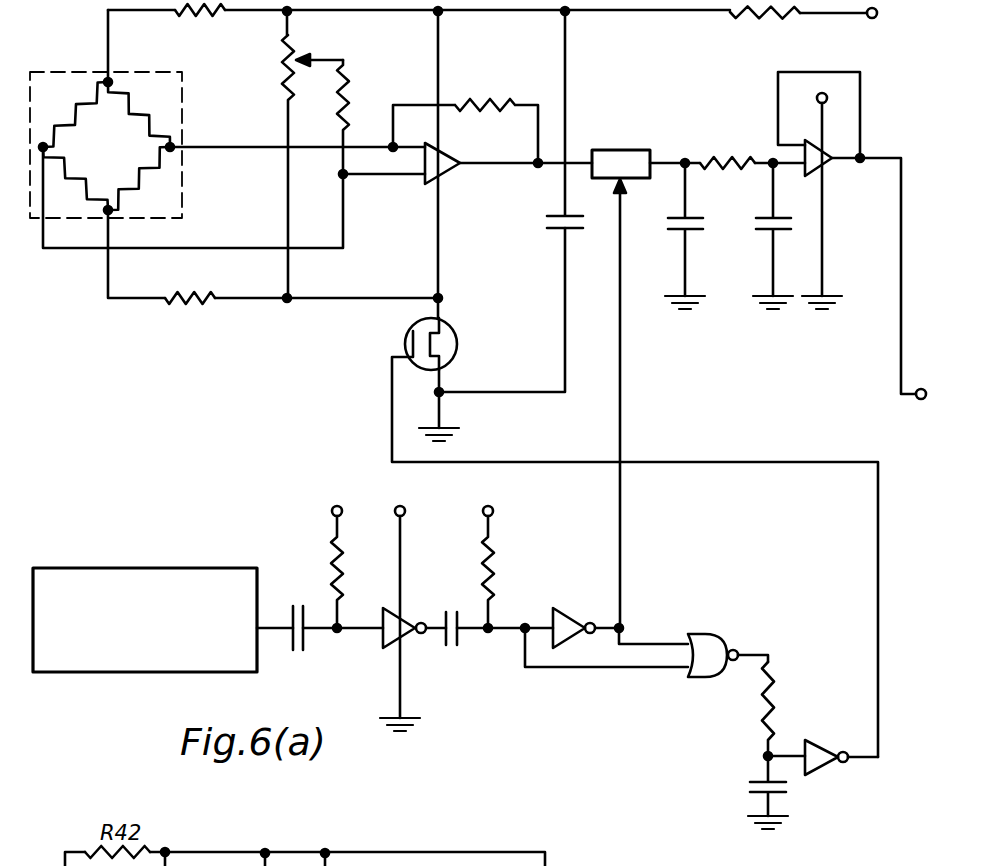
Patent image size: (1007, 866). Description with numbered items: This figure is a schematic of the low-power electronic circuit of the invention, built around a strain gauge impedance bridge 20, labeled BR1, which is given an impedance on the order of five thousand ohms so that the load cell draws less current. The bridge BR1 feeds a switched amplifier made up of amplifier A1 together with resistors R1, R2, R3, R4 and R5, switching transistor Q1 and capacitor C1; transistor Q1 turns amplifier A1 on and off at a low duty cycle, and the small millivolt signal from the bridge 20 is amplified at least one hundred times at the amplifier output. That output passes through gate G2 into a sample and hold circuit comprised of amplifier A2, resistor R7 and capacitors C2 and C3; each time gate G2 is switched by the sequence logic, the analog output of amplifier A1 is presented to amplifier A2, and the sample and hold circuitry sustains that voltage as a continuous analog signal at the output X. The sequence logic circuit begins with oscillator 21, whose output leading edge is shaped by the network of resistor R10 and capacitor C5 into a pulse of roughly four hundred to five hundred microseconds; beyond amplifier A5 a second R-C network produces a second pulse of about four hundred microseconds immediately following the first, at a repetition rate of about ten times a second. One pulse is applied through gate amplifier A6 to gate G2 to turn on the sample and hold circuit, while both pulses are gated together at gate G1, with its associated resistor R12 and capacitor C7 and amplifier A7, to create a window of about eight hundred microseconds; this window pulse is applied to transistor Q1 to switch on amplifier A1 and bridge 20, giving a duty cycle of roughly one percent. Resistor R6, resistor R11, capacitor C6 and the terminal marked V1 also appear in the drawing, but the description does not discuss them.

The strain gauge impedance bridge 20 is at (68, 71).
The oscillator 21 is at (147, 568).
The strain gauge impedance bridge BR1 is at (106, 146).
The resistor R1 is at (200, 29).
The resistor R2 is at (290, 154).
The resistor R3 is at (360, 117).
The resistor R4 is at (190, 284).
The resistor R5 is at (465, 117).
The resistor R6 is at (765, 31).
The resistor R7 is at (727, 150).
The resistor R10 is at (360, 567).
The resistor R11 is at (511, 567).
The resistor R12 is at (794, 709).
The capacitor C1 is at (545, 126).
The capacitor C2 is at (666, 236).
The capacitor C3 is at (755, 236).
The capacitor C5 is at (291, 646).
The capacitor C6 is at (451, 649).
The capacitor C7 is at (743, 792).
The switched amplifier A1 is at (450, 173).
The amplifier A2 is at (846, 233).
The amplifier A5 is at (405, 618).
The gate amplifier A6 is at (574, 620).
The amplifier A7 is at (828, 751).
The gate G1 is at (728, 642).
The sampling gate G2 is at (621, 389).
The switching transistor Q1 is at (635, 537).
The supply voltage V1 is at (898, 29).
The analog output X is at (915, 415).